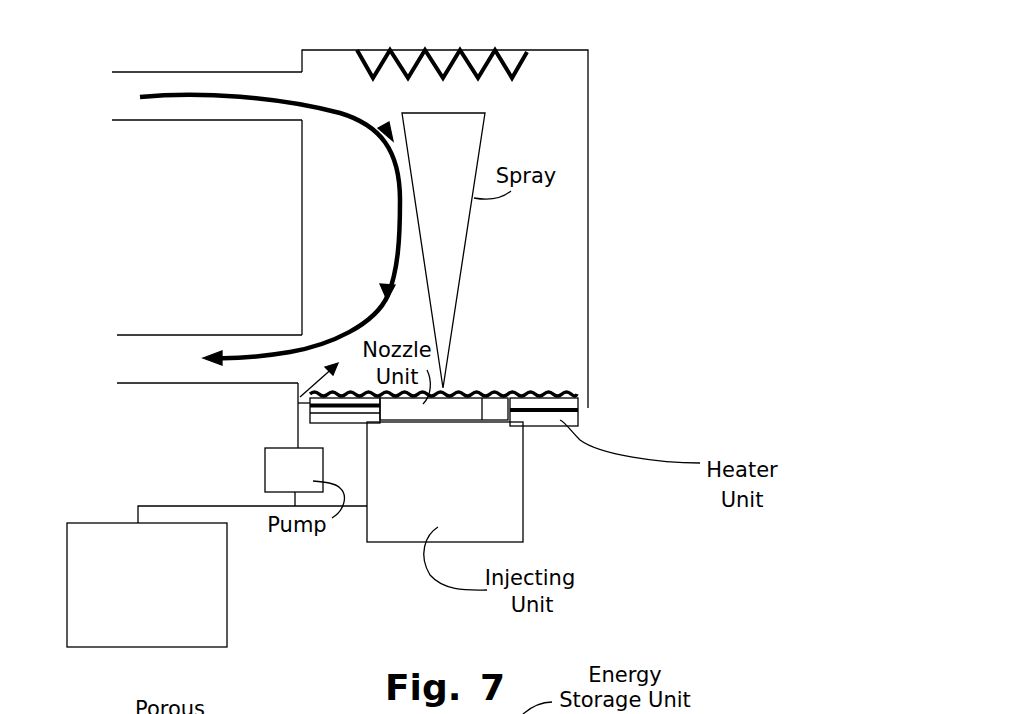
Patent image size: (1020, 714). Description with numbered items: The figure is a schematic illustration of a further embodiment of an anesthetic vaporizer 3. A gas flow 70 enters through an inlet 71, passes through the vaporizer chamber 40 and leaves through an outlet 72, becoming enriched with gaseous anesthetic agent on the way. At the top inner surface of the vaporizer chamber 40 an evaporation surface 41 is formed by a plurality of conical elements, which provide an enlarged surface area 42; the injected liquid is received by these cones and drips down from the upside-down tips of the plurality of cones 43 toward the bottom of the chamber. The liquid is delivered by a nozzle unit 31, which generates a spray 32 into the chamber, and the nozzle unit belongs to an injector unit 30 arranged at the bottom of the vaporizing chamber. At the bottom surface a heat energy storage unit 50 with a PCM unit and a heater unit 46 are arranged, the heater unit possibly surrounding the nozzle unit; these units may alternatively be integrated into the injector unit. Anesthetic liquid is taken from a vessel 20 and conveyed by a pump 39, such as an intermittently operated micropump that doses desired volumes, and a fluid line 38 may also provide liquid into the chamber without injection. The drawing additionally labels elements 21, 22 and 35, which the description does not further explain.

The anesthetic vaporizer 3 is at (726, 407).
The vessel 20 is at (103, 523).
The anesthetic agent liquid 21 is at (199, 574).
The liquid supply line 22 is at (178, 506).
The injector unit 30 is at (525, 463).
The nozzle unit 31 is at (482, 405).
The spray 32 is at (469, 241).
The energy storage unit connection 35 is at (323, 556).
The fluid line 38 is at (297, 442).
The pump 39 is at (294, 477).
The vaporizer chamber 40 is at (302, 232).
The evaporation surface 41 is at (578, 392).
The enlarged surface area 42 is at (482, 398).
The plurality of cones 43 is at (519, 77).
The heater unit 46 is at (580, 410).
The heat energy storage unit 50 is at (553, 400).
The gas flow 70 is at (363, 125).
The inlet 71 is at (190, 108).
The outlet 72 is at (147, 347).